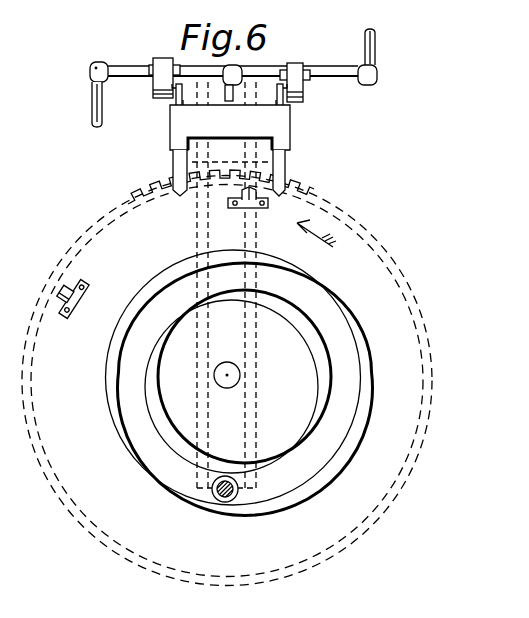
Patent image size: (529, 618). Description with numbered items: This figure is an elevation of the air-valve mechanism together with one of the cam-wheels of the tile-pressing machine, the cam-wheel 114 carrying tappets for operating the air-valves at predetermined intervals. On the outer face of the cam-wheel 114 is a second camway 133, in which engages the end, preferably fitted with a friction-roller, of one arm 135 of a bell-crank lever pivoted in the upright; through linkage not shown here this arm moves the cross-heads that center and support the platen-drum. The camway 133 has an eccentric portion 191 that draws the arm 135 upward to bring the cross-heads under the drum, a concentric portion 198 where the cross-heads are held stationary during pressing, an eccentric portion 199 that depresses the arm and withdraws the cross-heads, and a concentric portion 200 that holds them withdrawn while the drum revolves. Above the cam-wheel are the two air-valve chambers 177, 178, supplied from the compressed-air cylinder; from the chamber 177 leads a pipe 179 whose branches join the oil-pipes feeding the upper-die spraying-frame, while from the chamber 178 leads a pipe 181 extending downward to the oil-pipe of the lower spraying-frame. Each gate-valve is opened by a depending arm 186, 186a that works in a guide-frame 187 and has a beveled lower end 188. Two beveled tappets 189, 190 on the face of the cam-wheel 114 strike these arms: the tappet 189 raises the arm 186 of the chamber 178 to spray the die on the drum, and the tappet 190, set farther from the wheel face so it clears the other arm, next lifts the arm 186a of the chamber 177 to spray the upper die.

The cam-wheel 114 is at (396, 267).
The camway 133 is at (362, 406).
The arm of bell-crank lever 135 is at (219, 500).
The air-valve chamber 177 is at (298, 64).
The air-valve chamber 178 is at (162, 58).
The pipe 179 is at (238, 80).
The pipe 181 is at (93, 108).
The depending arm 186 is at (174, 168).
The depending arm 186a is at (287, 169).
The guide-frame 187 is at (230, 127).
The beveled lower end 188 is at (131, 224).
The tappet 189 is at (66, 318).
The tappet 190 is at (245, 206).
The eccentric portion of camway 191 is at (145, 432).
The concentric portion of camway 198 is at (150, 308).
The eccentric portion of camway 199 is at (318, 312).
The concentric portion of camway 200 is at (322, 450).